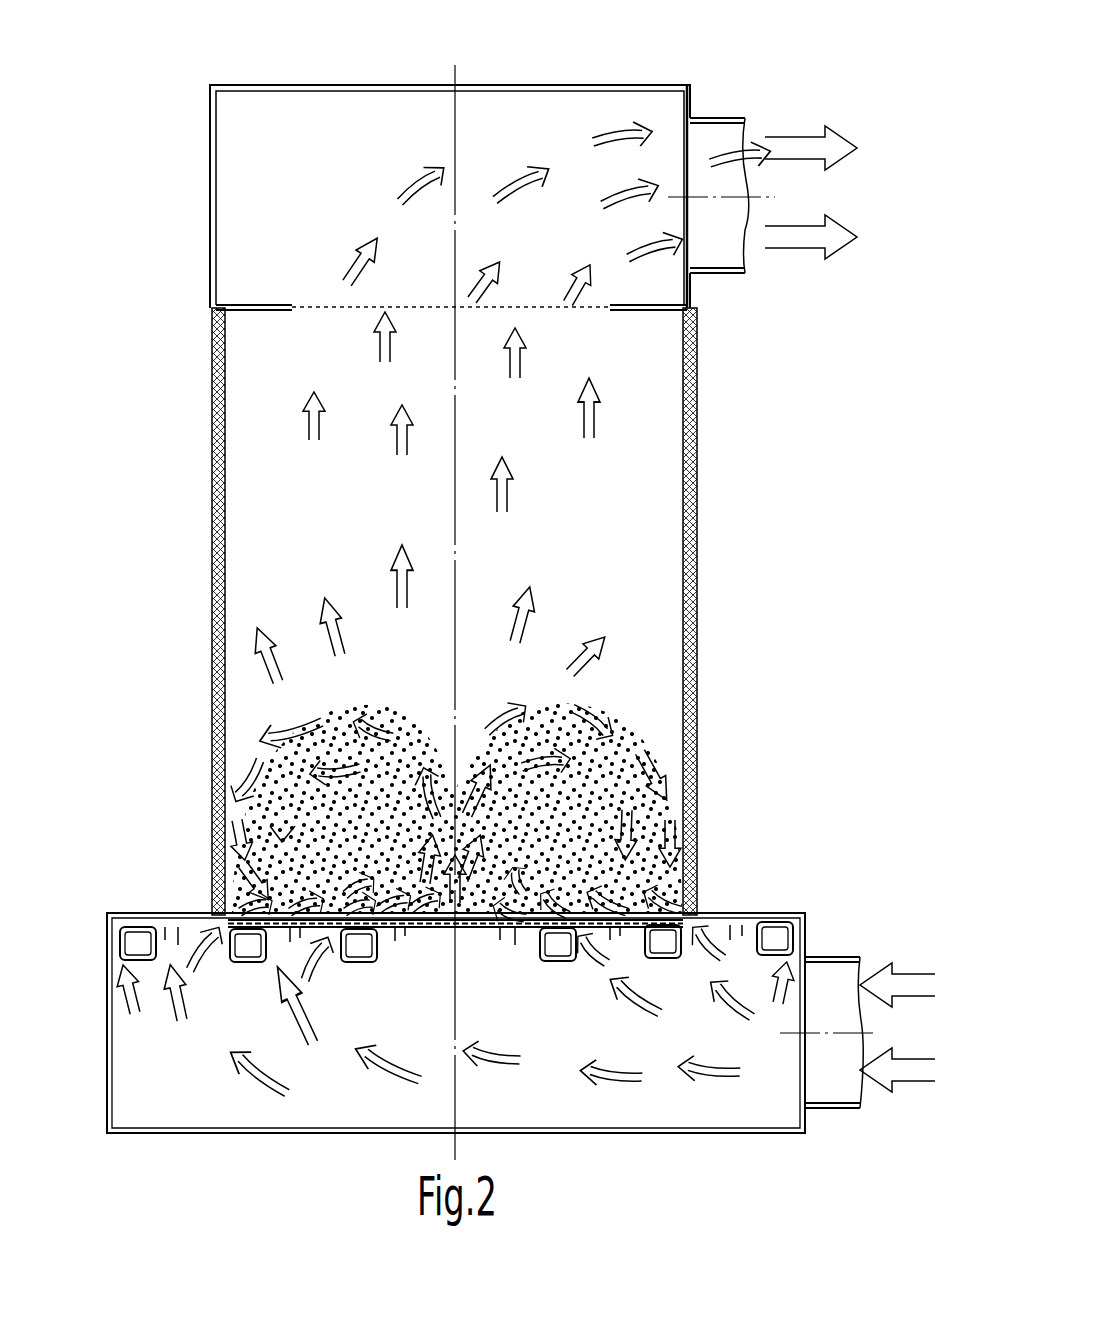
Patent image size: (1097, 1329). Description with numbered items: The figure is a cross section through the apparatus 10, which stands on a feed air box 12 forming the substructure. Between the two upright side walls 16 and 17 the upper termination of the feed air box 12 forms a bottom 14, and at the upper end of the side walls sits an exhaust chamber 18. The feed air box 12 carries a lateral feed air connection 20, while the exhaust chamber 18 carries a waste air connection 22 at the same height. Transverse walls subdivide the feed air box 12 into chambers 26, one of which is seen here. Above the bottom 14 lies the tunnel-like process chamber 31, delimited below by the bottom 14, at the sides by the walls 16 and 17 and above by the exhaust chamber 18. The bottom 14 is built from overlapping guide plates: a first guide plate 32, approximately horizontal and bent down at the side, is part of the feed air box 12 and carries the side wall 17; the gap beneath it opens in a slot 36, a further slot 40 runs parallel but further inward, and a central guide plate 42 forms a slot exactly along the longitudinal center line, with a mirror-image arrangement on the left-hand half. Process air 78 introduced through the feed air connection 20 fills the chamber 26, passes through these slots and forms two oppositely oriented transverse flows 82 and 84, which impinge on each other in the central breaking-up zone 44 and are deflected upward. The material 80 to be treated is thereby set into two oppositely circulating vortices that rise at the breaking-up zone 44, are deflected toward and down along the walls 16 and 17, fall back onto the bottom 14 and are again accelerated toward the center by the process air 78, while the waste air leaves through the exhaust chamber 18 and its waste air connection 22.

The apparatus 10 is at (128, 212).
The feed air box 12 is at (603, 1135).
The bottom 14 is at (330, 916).
The upright side wall 16 is at (212, 550).
The upright side wall 17 is at (697, 580).
The exhaust chamber 18 is at (290, 85).
The feed air connection 20 is at (835, 1110).
The waste air connection 22 is at (722, 282).
The chamber 26 is at (390, 1111).
The process chamber 31 is at (625, 549).
The first guide plate 32 is at (765, 905).
The slot 36 is at (697, 858).
The slot 40 is at (568, 915).
The central guide plate 42 is at (468, 950).
The central breaking-up zone 44 is at (460, 915).
The process air 78 is at (900, 985).
The material to be treated 80 is at (412, 735).
The flow 82 is at (463, 790).
The flow 84 is at (450, 808).